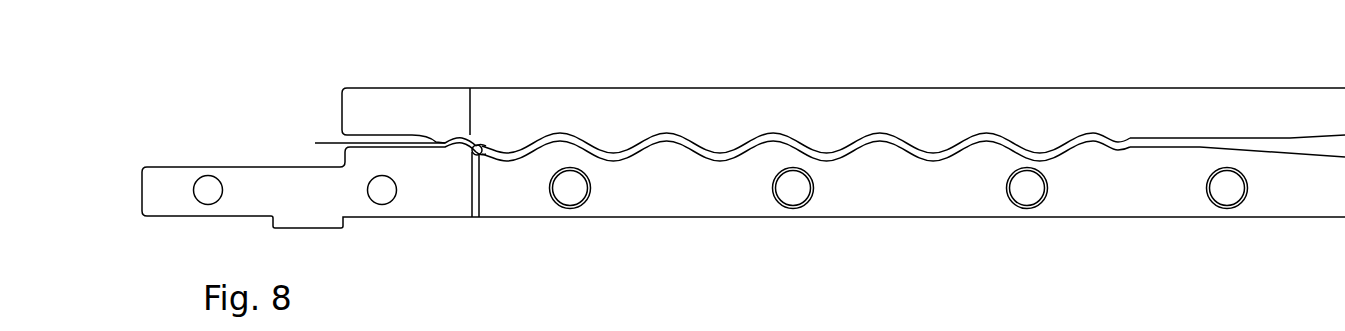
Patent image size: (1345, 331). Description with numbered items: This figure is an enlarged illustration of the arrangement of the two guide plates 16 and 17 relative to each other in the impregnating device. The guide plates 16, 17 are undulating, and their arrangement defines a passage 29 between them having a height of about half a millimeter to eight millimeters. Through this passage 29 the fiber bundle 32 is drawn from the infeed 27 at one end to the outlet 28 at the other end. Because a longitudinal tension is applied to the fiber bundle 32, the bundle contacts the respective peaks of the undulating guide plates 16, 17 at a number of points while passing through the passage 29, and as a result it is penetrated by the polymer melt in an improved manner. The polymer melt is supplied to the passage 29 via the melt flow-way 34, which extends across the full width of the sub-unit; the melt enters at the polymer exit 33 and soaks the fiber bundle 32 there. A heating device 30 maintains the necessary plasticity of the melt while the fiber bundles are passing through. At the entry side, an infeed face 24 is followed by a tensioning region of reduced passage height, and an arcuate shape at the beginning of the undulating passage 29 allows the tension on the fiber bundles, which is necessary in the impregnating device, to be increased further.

The guide plate 16 is at (697, 115).
The guide plate 17 is at (888, 197).
The infeed face 24 is at (382, 160).
The infeed 27 is at (343, 152).
The outlet 28 is at (1344, 145).
The passage 29 is at (1212, 148).
The heating device 30 is at (572, 190).
The fiber bundle 32 is at (588, 147).
The polymer exit 33 is at (482, 145).
The melt flow-way 34 is at (481, 158).